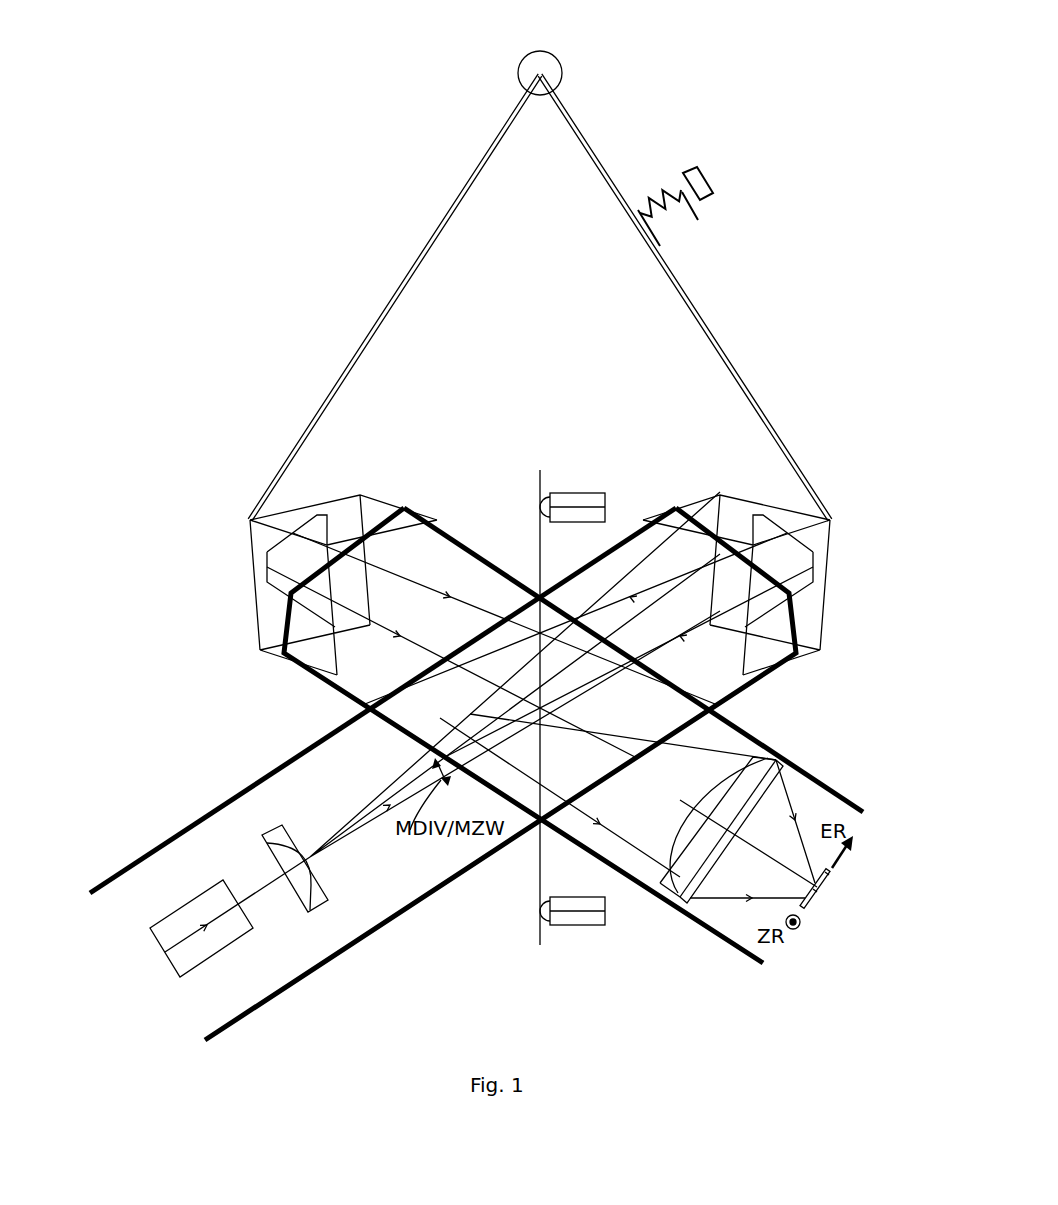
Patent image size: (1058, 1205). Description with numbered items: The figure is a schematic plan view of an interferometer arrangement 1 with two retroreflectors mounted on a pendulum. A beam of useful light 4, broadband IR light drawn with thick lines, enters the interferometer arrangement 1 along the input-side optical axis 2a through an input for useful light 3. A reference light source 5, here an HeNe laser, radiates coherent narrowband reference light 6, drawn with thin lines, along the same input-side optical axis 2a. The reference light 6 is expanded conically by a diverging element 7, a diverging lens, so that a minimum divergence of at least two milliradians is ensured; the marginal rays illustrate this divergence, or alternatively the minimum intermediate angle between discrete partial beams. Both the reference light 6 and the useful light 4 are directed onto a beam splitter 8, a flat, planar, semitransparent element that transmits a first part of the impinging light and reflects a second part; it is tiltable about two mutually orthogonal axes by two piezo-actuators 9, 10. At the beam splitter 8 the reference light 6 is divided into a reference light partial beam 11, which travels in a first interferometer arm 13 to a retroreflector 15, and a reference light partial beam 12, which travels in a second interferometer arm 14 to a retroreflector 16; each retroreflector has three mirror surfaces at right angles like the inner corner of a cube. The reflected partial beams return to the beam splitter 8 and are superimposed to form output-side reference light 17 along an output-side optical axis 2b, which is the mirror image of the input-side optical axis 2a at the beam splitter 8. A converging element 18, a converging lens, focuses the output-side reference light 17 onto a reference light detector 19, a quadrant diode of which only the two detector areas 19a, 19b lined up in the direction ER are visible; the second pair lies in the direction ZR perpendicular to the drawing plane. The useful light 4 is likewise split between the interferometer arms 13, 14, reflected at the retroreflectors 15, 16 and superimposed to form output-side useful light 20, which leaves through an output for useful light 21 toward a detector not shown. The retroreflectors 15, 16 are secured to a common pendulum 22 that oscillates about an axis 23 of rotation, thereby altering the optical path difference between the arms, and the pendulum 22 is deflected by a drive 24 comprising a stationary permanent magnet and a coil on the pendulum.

The interferometer arrangement 1 is at (262, 300).
The input-side optical axis 2a is at (153, 958).
The output-side optical axis 2b is at (824, 892).
The input for useful light 3 is at (181, 829).
The useful light 4 is at (355, 935).
The reference light source 5 is at (187, 922).
The reference light 6 is at (258, 890).
The diverging element 7 is at (318, 892).
The beam splitter 8 is at (533, 478).
The actuator 9 is at (573, 916).
The actuator 10 is at (590, 494).
The reference light partial beam 11 is at (678, 633).
The reference light partial beam 12 is at (432, 588).
The first interferometer arm 13 is at (693, 486).
The second interferometer arm 14 is at (411, 488).
The retroreflector 15 is at (815, 604).
The retroreflector 16 is at (358, 497).
The output-side reference light 17 is at (663, 882).
The converging element 18 is at (692, 887).
The reference light detector 19 is at (803, 918).
The detector area 19a is at (815, 902).
The detector area 19b is at (834, 872).
The output-side useful light 20 is at (633, 882).
The output for useful light 21 is at (838, 800).
The pendulum 22 is at (397, 265).
The axis of rotation 23 is at (540, 73).
The drive 24 is at (704, 219).